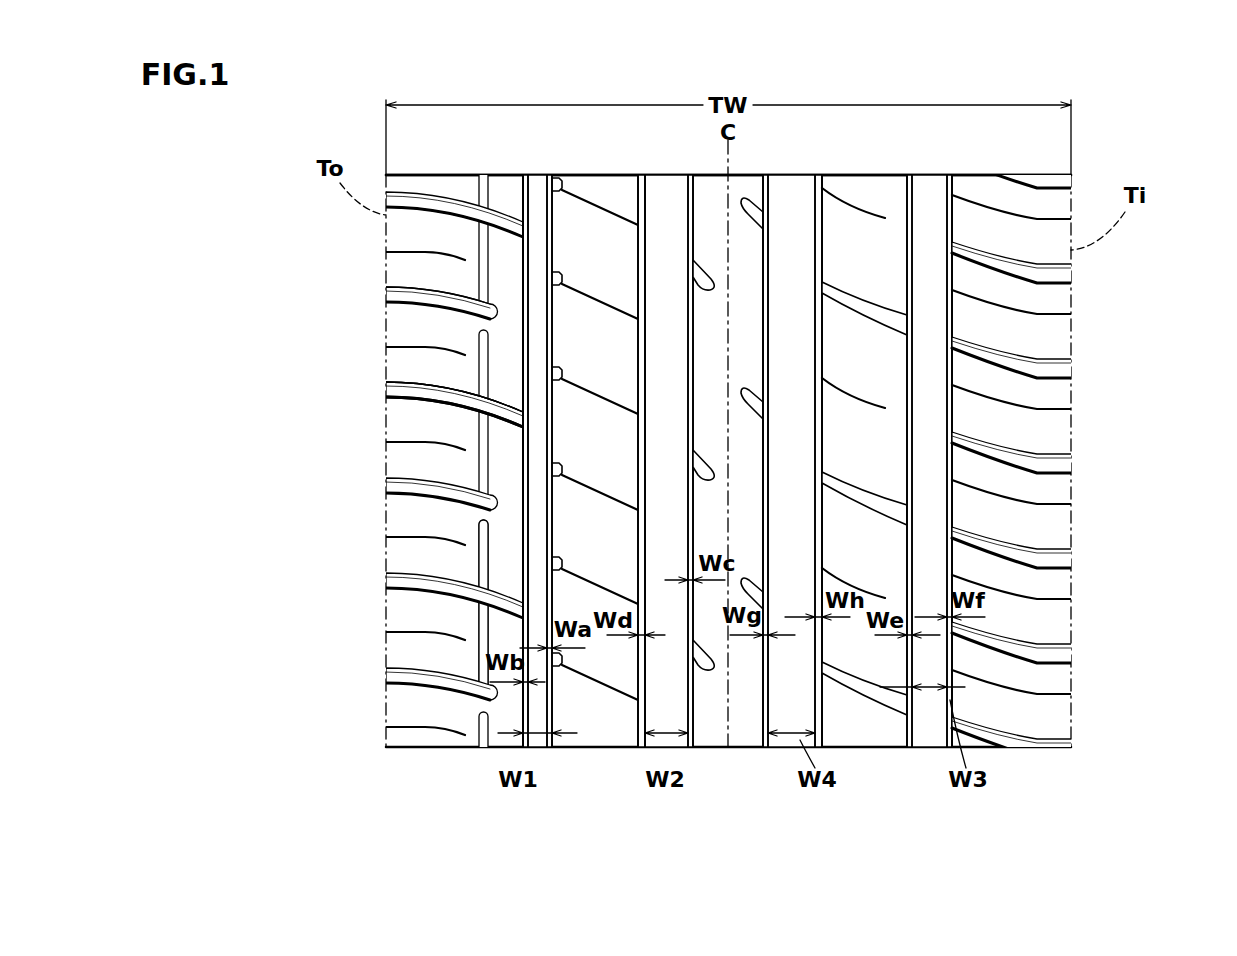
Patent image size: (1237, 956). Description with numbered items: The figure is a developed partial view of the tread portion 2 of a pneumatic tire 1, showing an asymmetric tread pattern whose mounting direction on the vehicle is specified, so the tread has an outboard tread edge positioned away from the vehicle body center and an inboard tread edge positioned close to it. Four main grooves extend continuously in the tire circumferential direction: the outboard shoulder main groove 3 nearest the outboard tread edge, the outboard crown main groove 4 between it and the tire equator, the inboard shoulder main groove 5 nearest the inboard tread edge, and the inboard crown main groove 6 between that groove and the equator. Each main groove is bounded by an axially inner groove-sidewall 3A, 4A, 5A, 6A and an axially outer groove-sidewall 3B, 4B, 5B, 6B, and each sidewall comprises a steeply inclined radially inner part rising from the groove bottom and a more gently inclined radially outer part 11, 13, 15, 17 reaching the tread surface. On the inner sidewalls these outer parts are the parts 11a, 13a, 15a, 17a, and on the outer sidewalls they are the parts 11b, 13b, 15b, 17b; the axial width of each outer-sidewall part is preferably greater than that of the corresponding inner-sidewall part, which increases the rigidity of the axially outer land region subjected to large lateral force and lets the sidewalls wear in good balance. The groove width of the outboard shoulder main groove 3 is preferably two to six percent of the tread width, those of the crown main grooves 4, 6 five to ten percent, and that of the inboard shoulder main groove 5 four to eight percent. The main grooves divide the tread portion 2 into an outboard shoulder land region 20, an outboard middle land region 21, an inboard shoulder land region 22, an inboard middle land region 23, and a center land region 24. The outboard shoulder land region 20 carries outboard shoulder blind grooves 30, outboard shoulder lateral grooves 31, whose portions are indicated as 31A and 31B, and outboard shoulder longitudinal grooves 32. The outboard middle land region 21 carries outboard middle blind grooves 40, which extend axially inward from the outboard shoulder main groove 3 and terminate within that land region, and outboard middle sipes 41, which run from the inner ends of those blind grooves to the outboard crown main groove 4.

The pneumatic tire 1 is at (1182, 130).
The tread portion 2 is at (1100, 175).
The outboard shoulder main groove 3 is at (542, 191).
The axially inner groove-sidewall 3A is at (588, 388).
The axially outer groove-sidewall 3B is at (527, 258).
The outboard crown main groove 4 is at (662, 199).
The axially inner groove-sidewall 4A is at (693, 690).
The axially outer groove-sidewall 4B is at (637, 655).
The inboard shoulder main groove 5 is at (942, 201).
The axially inner groove-sidewall 5A is at (912, 665).
The axially outer groove-sidewall 5B is at (952, 660).
The inboard crown main groove 6 is at (810, 201).
The axially inner groove-sidewall 6A is at (768, 655).
The axially outer groove-sidewall 6B is at (818, 650).
The first main groove body 11 is at (552, 690).
The radially outer part 11a is at (537, 461).
The radially outer part 11b is at (523, 693).
The radially outer part 13 is at (694, 690).
The radially outer part 13a is at (666, 461).
The radially outer part 13b is at (647, 655).
The radially outer part 15 is at (915, 680).
The radially outer part 15a is at (929, 461).
The radially outer part 15b is at (965, 650).
The radially outer part 17 is at (785, 690).
The radially outer part 17a is at (791, 461).
The radially outer part 17b is at (822, 665).
The outboard shoulder land region 20 is at (462, 189).
The outboard middle land region 21 is at (622, 191).
The inboard shoulder land region 22 is at (1000, 201).
The inboard middle land region 23 is at (868, 197).
The center land region 24 is at (717, 211).
The outboard shoulder blind grooves 30 is at (415, 489).
The outboard shoulder lateral grooves 31 is at (240, 346).
The wide portion of lateral groove 31A is at (455, 418).
The chamfered portion of lateral groove 31B is at (430, 385).
The outboard shoulder longitudinal grooves 32 is at (480, 522).
The outboard middle blind grooves 40 is at (479, 297).
The outboard middle sipes 41 is at (553, 372).